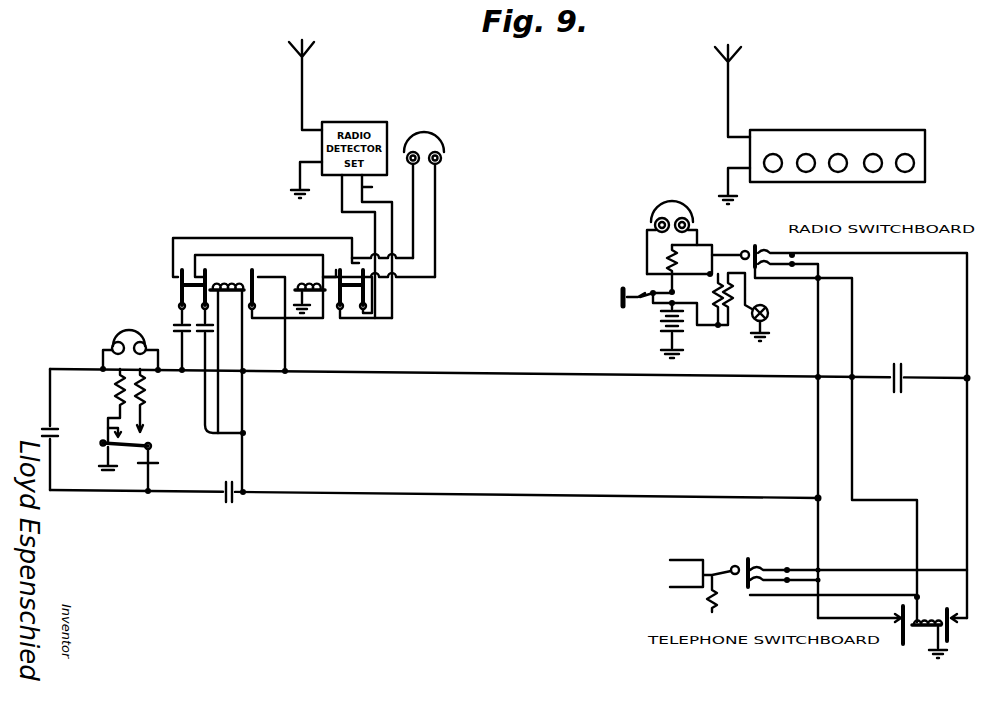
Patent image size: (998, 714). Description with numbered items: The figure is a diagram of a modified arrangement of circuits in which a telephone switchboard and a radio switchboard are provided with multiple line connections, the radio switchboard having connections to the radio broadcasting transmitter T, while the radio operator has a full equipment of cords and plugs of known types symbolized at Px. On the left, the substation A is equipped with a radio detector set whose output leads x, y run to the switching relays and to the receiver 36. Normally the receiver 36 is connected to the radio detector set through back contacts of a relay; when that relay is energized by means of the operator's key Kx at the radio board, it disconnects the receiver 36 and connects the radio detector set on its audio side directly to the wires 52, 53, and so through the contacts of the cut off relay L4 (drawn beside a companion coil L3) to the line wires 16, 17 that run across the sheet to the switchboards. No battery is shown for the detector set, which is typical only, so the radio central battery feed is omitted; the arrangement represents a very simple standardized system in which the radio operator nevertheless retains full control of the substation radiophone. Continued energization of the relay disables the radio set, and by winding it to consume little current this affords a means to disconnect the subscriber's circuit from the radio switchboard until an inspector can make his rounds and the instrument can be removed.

The receiver 36 is at (431, 131).
The wire 52 is at (290, 241).
The wire 53 is at (275, 260).
The cut off relay L4 is at (227, 375).
The coil L3 is at (309, 285).
The line wire 16 is at (397, 370).
The line wire 17 is at (408, 491).
The subscriber station A is at (100, 410).
The radio broadcasting transmitter T is at (820, 124).
The cords and plugs Px is at (645, 237).
The operator's key Kx is at (638, 311).
The detector output lead x is at (345, 246).
The detector output lead y is at (377, 246).